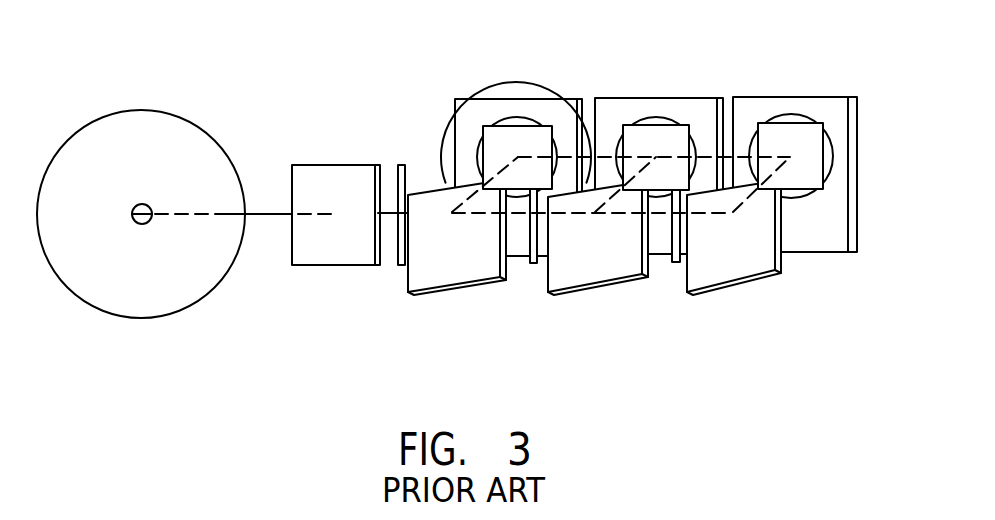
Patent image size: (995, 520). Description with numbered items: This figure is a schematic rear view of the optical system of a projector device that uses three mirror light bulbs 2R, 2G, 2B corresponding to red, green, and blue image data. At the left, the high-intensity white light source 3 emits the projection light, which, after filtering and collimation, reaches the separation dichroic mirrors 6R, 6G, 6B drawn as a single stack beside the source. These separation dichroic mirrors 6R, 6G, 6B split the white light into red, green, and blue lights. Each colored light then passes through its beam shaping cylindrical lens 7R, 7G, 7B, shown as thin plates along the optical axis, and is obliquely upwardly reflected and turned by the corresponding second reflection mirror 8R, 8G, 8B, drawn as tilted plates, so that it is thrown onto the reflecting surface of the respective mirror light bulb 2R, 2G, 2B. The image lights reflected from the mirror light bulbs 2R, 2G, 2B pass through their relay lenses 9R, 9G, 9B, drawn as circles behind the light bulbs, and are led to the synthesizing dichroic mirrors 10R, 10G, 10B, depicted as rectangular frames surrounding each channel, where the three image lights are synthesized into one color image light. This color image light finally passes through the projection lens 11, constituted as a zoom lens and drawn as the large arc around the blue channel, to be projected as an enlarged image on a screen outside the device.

The high-intensity white light source 3 is at (131, 110).
The separation dichroic mirror 6R is at (330, 184).
The separation dichroic mirror 6G is at (340, 184).
The separation dichroic mirror 6B is at (322, 165).
The beam shaping cylindrical lens 7B is at (400, 268).
The beam shaping cylindrical lens 7G is at (533, 265).
The beam shaping cylindrical lens 7R is at (674, 264).
The second reflection mirror 8B is at (444, 292).
The second reflection mirror 8G is at (590, 290).
The second reflection mirror 8R is at (757, 281).
The relay lens 9B is at (505, 117).
The relay lens 9G is at (638, 117).
The relay lens 9R is at (777, 114).
The synthesizing dichroic mirror 10B is at (575, 98).
The synthesizing dichroic mirror 10G is at (698, 97).
The synthesizing dichroic mirror 10R is at (835, 97).
The projection lens 11 is at (488, 82).
The mirror light bulb 2B is at (542, 125).
The mirror light bulb 2G is at (680, 125).
The mirror light bulb 2R is at (817, 123).